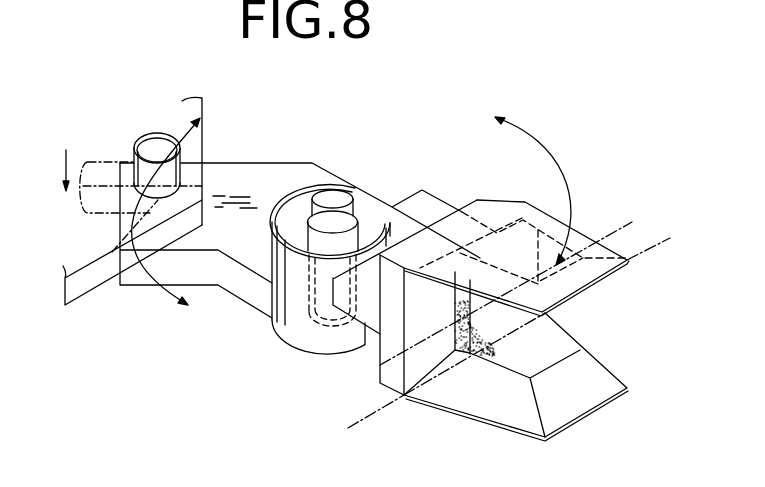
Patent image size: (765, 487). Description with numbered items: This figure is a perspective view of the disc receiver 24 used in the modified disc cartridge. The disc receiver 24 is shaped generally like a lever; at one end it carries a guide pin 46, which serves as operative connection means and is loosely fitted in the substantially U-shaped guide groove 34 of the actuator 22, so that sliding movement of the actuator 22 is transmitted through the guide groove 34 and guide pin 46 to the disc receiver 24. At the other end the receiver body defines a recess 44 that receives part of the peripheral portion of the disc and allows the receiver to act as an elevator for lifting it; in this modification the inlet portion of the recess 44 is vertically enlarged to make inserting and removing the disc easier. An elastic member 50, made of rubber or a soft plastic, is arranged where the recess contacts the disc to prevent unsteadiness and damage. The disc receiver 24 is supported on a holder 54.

The actuator 22 is at (95, 290).
The disc receiver 24 is at (258, 163).
The guide groove 34 is at (97, 182).
The recess 44 is at (607, 324).
The guide pin 46 is at (152, 142).
The elastic member 50 is at (507, 328).
The holder 54 is at (352, 189).